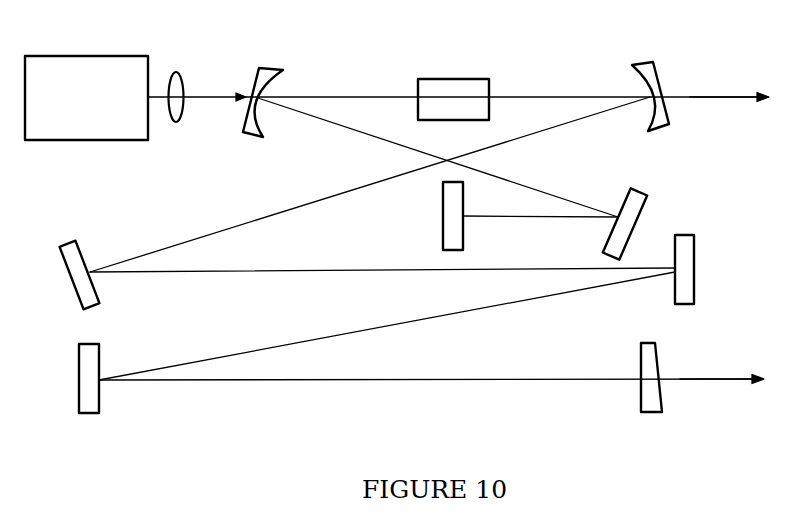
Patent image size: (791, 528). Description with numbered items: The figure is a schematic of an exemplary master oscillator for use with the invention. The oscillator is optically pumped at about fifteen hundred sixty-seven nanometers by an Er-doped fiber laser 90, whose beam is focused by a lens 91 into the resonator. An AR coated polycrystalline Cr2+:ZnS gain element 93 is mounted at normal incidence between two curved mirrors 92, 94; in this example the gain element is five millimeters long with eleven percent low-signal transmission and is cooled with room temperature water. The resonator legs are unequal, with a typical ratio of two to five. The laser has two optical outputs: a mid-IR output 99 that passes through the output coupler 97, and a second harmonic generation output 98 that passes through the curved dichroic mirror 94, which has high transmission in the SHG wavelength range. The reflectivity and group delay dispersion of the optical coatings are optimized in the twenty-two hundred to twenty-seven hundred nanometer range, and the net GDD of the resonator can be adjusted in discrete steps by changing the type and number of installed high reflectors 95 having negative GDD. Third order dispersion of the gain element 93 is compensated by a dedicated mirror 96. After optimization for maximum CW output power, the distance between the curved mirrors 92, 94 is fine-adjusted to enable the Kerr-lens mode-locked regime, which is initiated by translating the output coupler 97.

The Er-doped fiber laser 90 is at (84, 77).
The lens 91 is at (177, 88).
The curved mirror 92 is at (263, 78).
The Cr2+:ZnS gain element 93 is at (443, 90).
The curved dichroic mirror 94 is at (650, 75).
The high reflectors 95 is at (668, 251).
The dedicated mirror 96 is at (472, 236).
The output coupler 97 is at (650, 363).
The second harmonic generation output 98 is at (723, 92).
The mid-IR output 99 is at (714, 370).